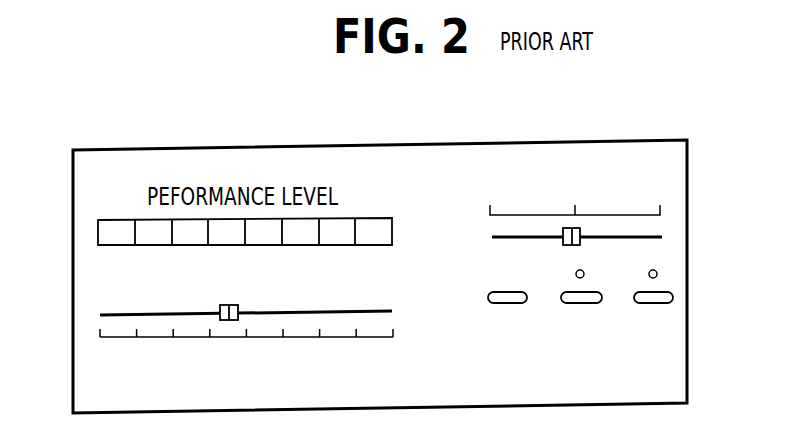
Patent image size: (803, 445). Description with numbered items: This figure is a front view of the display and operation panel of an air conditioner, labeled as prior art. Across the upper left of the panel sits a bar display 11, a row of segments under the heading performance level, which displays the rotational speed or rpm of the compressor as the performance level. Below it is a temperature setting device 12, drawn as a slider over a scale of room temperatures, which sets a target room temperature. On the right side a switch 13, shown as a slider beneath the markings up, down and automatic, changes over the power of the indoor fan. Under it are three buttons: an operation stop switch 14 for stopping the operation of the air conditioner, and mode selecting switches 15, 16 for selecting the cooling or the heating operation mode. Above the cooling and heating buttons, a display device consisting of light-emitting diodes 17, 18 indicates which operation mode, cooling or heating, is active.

The bar display 11 is at (112, 220).
The temperature setting device 12 is at (221, 305).
The switch 13 is at (587, 230).
The operation stop switch 14 is at (488, 297).
The mode selecting switch 15 is at (597, 290).
The mode selecting switch 16 is at (675, 295).
The light-emitting diode 17 is at (576, 274).
The light-emitting diode 18 is at (658, 273).